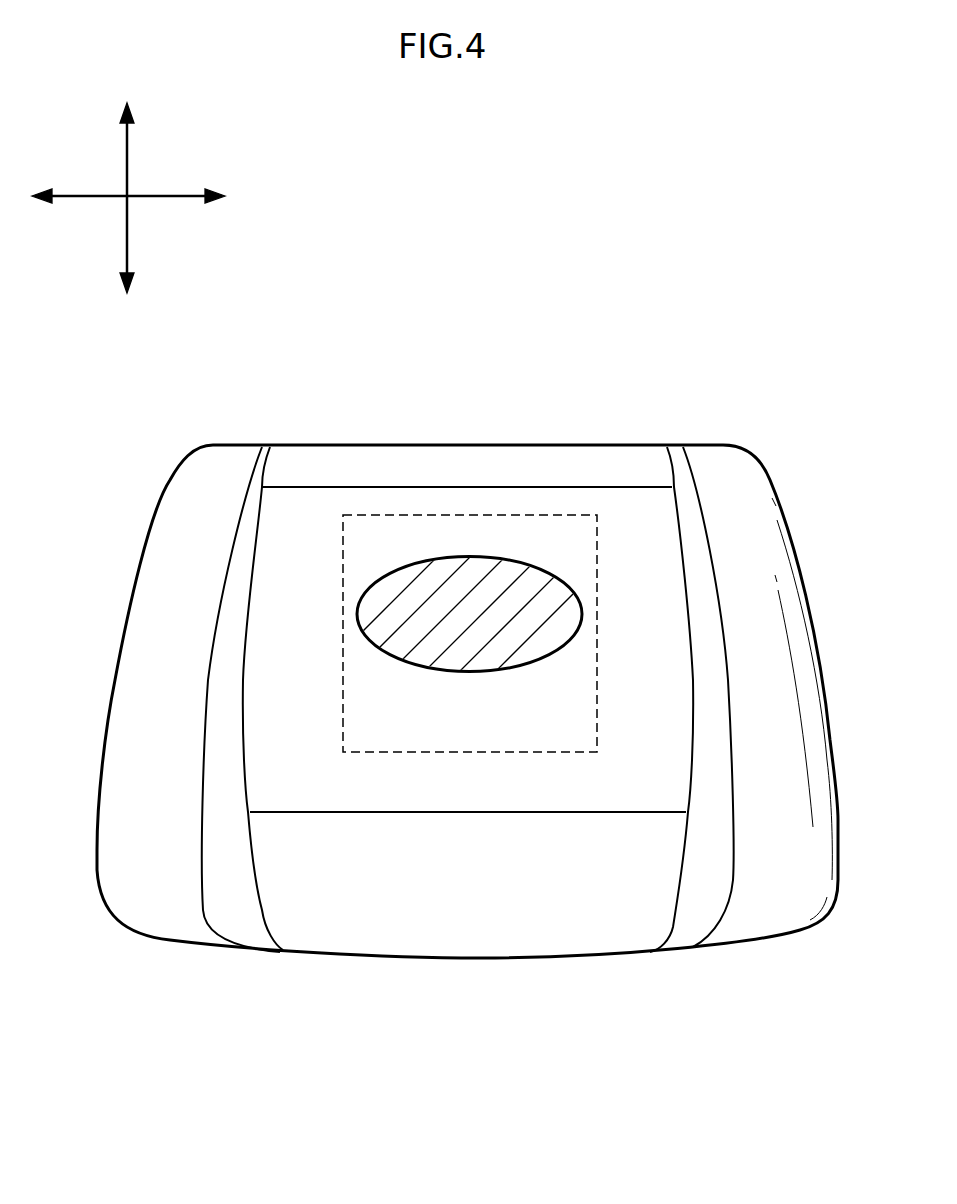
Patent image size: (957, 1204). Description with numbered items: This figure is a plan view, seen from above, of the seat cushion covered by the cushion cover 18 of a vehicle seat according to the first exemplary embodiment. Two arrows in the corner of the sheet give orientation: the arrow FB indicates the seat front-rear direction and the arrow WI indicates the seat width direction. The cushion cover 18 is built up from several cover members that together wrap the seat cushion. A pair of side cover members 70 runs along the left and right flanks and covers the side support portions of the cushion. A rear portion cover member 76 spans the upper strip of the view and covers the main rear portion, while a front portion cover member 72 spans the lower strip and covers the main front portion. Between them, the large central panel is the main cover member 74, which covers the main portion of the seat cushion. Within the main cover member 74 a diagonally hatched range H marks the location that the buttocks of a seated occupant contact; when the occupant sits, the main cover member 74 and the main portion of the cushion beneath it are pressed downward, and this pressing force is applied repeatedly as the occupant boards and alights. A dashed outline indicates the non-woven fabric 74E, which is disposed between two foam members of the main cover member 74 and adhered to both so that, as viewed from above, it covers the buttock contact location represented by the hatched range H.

The cushion cover 18 is at (170, 952).
The side cover members 70 is at (147, 620).
The front portion cover member 72 is at (390, 927).
The main cover member 74 is at (297, 522).
The non-woven fabric 74E is at (597, 555).
The rear portion cover member 76 is at (562, 462).
The diagonally hatched range H is at (443, 590).
The seat front-rear direction arrow FB is at (127, 167).
The seat width direction arrow WI is at (152, 198).